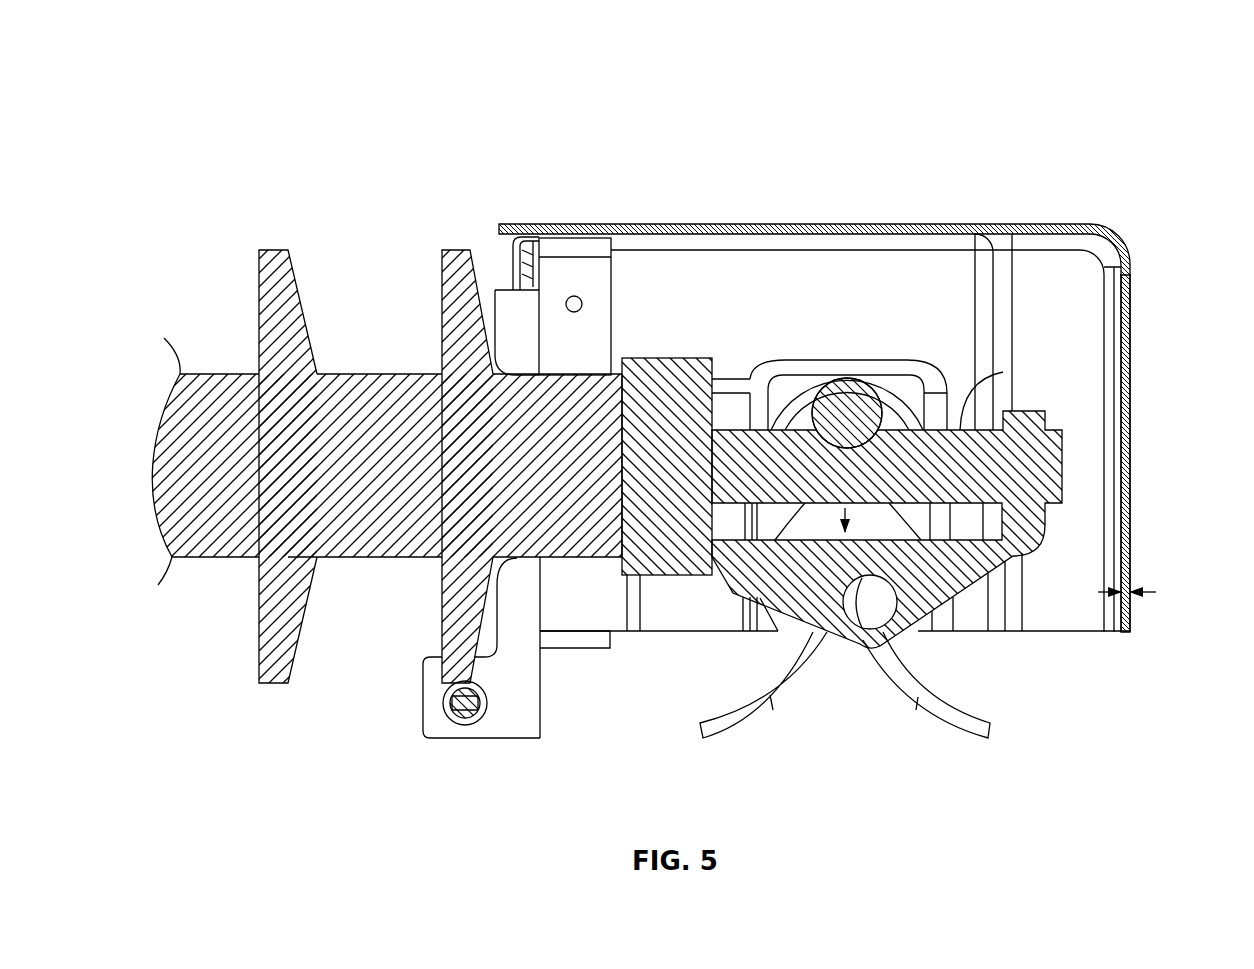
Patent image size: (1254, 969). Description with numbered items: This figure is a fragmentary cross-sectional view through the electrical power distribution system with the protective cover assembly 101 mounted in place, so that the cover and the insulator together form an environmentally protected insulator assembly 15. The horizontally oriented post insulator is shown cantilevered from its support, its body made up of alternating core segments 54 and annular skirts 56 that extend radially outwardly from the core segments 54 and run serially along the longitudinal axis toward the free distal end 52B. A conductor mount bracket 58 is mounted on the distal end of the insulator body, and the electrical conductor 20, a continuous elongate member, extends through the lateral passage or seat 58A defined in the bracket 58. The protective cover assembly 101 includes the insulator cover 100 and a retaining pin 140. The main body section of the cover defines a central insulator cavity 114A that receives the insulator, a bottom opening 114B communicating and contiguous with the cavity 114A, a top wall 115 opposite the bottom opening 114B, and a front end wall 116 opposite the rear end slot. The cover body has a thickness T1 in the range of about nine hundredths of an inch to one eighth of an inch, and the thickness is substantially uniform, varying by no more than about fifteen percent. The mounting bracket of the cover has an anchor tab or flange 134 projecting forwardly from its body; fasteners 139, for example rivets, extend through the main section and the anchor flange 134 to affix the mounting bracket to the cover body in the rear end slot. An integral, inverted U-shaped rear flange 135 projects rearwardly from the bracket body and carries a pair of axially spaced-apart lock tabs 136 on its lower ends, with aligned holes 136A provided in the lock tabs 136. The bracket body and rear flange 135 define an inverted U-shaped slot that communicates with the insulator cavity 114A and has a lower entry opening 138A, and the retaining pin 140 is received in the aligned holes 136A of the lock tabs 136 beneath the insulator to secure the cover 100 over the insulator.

The environmentally protected insulator assembly 15 is at (485, 128).
The electrical conductor 20 is at (850, 397).
The free distal end 52B is at (622, 447).
The core segments 54 is at (372, 388).
The annular skirts 56 is at (272, 250).
The conductor mount bracket 58 is at (668, 372).
The lateral passage or seat 58A is at (962, 430).
The insulator cover 100 is at (958, 197).
The protective cover assembly 101 is at (1083, 152).
The central insulator cavity 114A is at (847, 284).
The bottom opening 114B is at (1068, 642).
The top wall 115 is at (818, 226).
The front end wall 116 is at (1133, 455).
The anchor tab or flange 134 is at (596, 275).
The rear flange 135 is at (517, 633).
The lock tabs 136 is at (430, 708).
The aligned holes 136A is at (462, 720).
The lower entry opening 138A is at (527, 750).
The fasteners 139 is at (573, 295).
The retaining pin 140 is at (468, 713).
The thickness T1 is at (1150, 600).